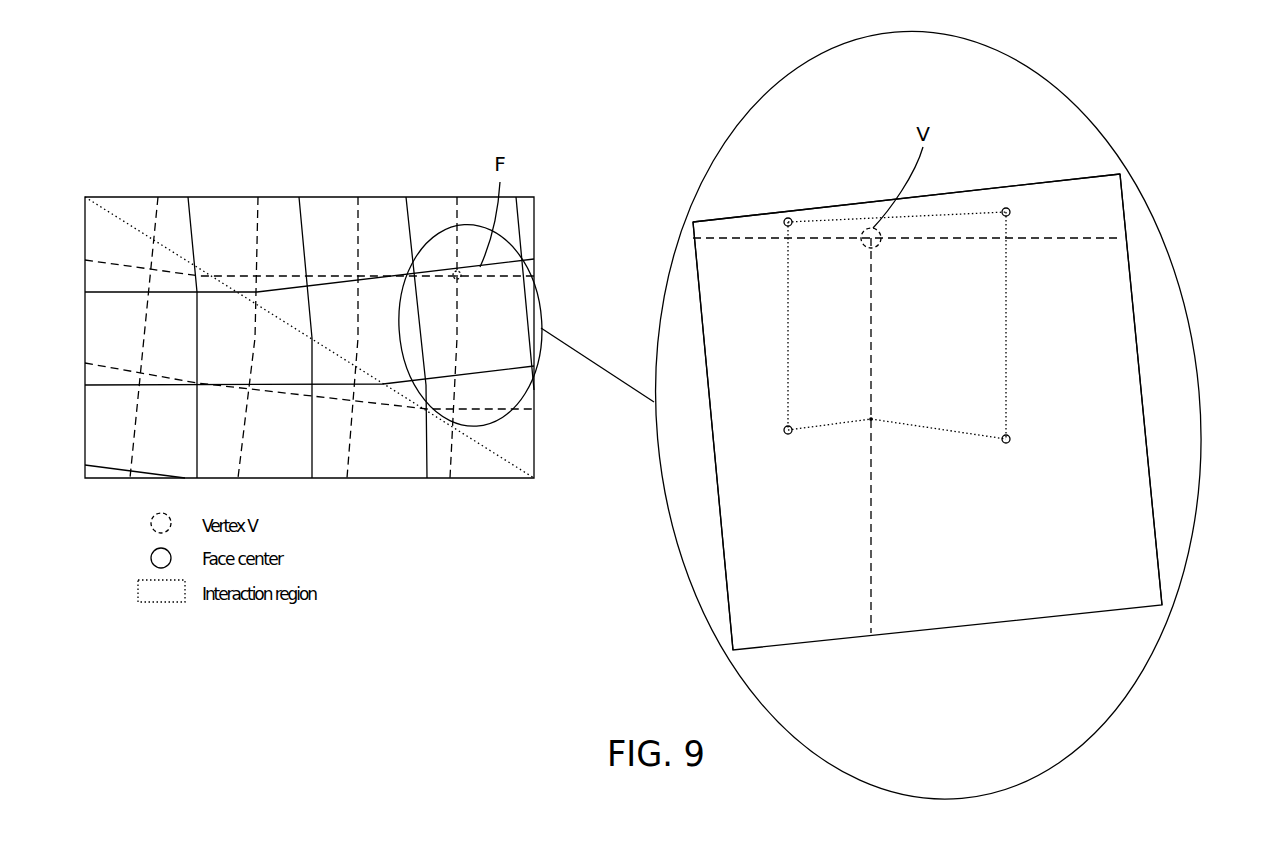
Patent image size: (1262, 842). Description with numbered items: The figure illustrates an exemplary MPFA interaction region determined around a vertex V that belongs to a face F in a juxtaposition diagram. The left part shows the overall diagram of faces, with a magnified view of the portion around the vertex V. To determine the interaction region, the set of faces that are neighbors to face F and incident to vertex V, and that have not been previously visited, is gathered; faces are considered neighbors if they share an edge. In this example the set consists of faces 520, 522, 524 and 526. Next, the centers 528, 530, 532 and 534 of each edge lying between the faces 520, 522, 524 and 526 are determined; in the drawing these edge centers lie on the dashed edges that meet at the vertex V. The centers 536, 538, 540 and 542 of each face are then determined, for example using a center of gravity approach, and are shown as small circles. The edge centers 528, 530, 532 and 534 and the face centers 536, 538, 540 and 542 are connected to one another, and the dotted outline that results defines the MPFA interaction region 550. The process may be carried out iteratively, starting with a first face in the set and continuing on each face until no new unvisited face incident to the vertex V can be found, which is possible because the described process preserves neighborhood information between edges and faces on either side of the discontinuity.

The face 520 is at (748, 227).
The face 522 is at (1115, 208).
The face 524 is at (1148, 550).
The face 526 is at (733, 603).
The edge center 528 is at (1003, 238).
The edge center 530 is at (873, 423).
The edge center 532 is at (777, 235).
The edge center 534 is at (873, 228).
The face center 536 is at (1009, 214).
The face center 538 is at (1007, 443).
The face center 540 is at (787, 435).
The face center 542 is at (788, 218).
The MPFA interaction region 550 is at (1003, 335).